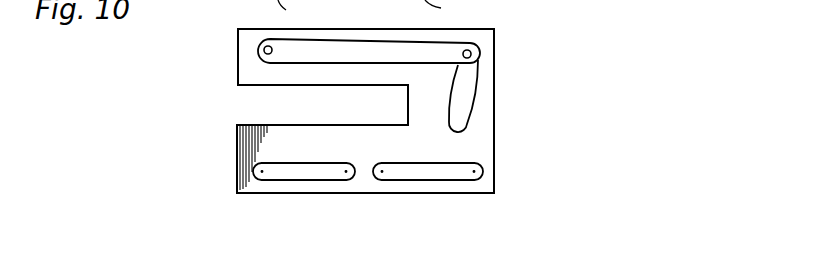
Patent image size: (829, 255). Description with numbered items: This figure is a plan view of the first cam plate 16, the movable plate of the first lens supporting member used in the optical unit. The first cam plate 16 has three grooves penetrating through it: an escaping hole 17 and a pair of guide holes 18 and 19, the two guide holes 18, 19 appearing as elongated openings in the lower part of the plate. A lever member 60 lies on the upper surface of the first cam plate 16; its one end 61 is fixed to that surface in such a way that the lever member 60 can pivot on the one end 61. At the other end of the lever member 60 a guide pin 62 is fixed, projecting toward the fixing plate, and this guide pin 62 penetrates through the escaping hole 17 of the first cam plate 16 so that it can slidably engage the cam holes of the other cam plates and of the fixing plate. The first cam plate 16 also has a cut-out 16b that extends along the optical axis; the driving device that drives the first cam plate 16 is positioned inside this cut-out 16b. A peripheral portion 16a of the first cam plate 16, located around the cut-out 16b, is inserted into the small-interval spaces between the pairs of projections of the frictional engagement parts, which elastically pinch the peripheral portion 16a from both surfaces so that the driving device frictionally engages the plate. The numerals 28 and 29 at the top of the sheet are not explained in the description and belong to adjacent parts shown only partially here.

The first cam plate 16 is at (494, 97).
The peripheral portion 16a is at (318, 75).
The cut-out 16b is at (270, 103).
The escaping hole 17 is at (465, 110).
The guide hole 18 is at (297, 171).
The guide hole 19 is at (433, 171).
The element 28 is at (297, 12).
The element 29 is at (448, 12).
The lever member 60 is at (372, 45).
The one end of the lever member 61 is at (259, 47).
The guide pin 62 is at (485, 53).